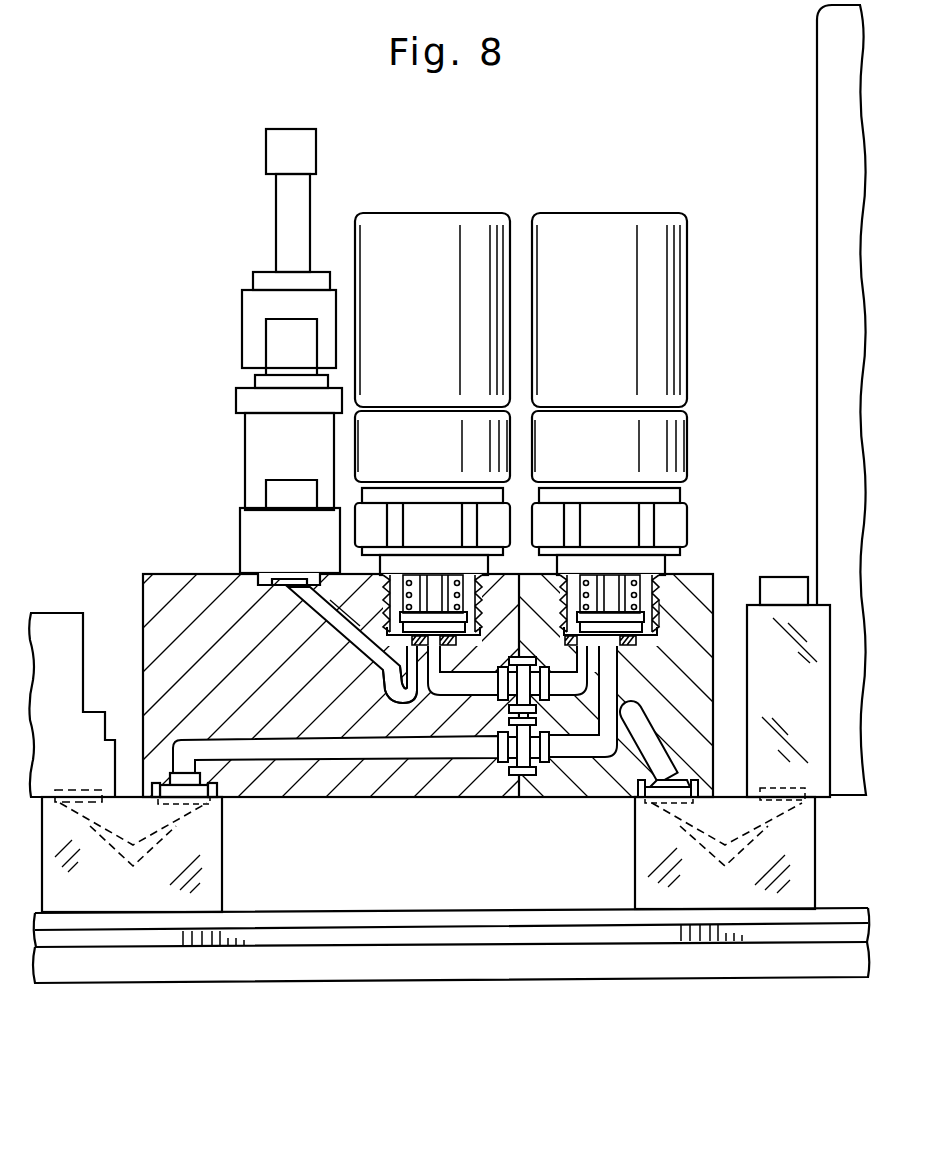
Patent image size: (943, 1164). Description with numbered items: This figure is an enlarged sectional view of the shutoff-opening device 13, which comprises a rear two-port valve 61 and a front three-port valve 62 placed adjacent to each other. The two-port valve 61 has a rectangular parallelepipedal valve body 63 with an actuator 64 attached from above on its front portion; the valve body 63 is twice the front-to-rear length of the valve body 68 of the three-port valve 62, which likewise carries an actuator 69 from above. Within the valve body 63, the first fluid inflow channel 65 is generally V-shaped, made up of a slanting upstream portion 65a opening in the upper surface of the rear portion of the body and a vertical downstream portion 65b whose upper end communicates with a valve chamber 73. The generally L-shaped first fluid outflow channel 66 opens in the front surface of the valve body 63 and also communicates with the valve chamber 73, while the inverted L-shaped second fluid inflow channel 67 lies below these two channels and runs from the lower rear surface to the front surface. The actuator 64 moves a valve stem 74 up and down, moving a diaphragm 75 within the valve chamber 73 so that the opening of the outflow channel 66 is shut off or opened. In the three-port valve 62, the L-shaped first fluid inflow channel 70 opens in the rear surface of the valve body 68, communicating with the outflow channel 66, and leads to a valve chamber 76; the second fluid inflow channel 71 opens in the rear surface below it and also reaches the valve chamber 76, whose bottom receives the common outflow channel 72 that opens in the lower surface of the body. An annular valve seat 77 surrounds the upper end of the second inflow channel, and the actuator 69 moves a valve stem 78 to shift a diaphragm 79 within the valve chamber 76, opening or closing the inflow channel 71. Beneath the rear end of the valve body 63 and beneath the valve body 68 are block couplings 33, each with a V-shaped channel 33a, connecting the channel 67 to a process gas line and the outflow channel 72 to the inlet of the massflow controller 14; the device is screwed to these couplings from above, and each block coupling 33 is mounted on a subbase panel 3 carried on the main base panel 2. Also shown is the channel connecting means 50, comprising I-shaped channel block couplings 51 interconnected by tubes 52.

The main base panel 2 is at (410, 963).
The subbase panel 3 is at (440, 935).
The shutoff-opening device 13 is at (633, 366).
The massflow controller 14 is at (838, 231).
The block coupling 33 is at (205, 872).
The V-shaped channel 33a is at (175, 805).
The channel connecting means 50 is at (312, 152).
The I-shaped channel block coupling 51 is at (256, 434).
The tube 52 is at (282, 208).
The two-port valve 61 is at (210, 578).
The three-port valve 62 is at (705, 580).
The valve body 63 is at (152, 578).
The actuator 64 is at (426, 230).
The first fluid inflow channel 65 is at (302, 596).
The slanting upstream portion 65a is at (323, 617).
The vertical downstream portion 65b is at (385, 691).
The first fluid outflow channel 66 is at (473, 690).
The second fluid inflow channel 67 is at (345, 752).
The valve body 68 is at (702, 613).
The actuator 69 is at (598, 230).
The first fluid inflow channel 70 is at (560, 690).
The second fluid inflow channel 71 is at (620, 737).
The outflow channel 72 is at (652, 742).
The valve chamber 73 is at (418, 702).
The valve stem 74 is at (427, 580).
The diaphragm 75 is at (372, 620).
The valve chamber 76 is at (622, 638).
The annular valve seat 77 is at (634, 652).
The valve stem 78 is at (604, 580).
The diaphragm 79 is at (652, 612).